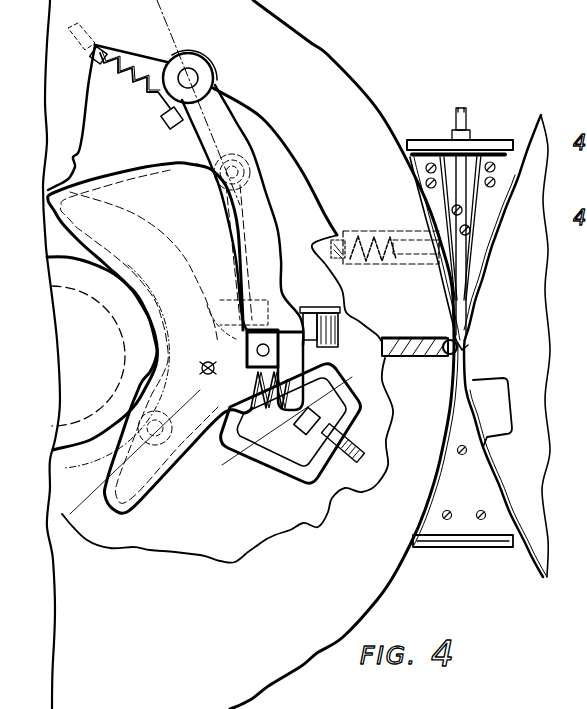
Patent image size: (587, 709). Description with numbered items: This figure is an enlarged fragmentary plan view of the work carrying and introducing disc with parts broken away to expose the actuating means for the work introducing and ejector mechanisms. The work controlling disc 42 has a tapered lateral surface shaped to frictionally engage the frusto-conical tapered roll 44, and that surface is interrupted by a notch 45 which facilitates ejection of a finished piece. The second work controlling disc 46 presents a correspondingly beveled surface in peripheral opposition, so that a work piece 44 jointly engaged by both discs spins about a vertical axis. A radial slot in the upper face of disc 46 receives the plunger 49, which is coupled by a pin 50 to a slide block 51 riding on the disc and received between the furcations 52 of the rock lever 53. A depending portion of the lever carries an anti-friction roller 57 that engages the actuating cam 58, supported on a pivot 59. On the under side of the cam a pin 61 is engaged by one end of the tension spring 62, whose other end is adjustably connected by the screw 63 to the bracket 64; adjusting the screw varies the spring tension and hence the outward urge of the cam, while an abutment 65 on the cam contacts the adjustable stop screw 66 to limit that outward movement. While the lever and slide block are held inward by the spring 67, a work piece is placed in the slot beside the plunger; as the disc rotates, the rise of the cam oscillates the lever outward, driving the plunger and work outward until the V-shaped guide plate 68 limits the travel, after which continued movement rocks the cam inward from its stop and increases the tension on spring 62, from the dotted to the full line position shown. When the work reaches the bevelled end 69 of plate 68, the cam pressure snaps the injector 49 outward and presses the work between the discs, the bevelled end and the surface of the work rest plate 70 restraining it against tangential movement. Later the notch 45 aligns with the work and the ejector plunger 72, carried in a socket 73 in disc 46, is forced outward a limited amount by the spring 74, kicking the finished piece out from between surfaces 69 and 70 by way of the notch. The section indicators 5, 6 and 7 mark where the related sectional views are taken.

The work controlling disc 42 is at (537, 543).
The frusto-conical tapered roll 44 is at (449, 355).
The notch 45 is at (503, 420).
The second work controlling disc 46 is at (397, 573).
The plunger 49 is at (422, 360).
The pin 50 is at (278, 300).
The slide block 51 is at (312, 350).
The furcations 52 is at (330, 396).
The rock lever 53 is at (255, 213).
The anti-friction roller 57 is at (246, 174).
The actuating cam 58 is at (135, 195).
The pivot 59 is at (158, 440).
The pin 61 is at (205, 368).
The tension spring 62 is at (270, 410).
The screw 63 is at (282, 465).
The bracket 64 is at (305, 488).
The abutment 65 is at (212, 318).
The adjustable stop screw 66 is at (372, 303).
The spring 67 is at (146, 36).
The V-shaped guide plate 68 is at (458, 540).
The bevelled end 69 is at (470, 350).
The work rest plate 70 is at (472, 306).
The ejector plunger 72 is at (438, 246).
The socket 73 is at (393, 240).
The spring 74 is at (352, 245).
The section line 5- 5 is at (433, 329).
The section line 6 is at (232, 378).
The section line 7- 7 is at (430, 327).